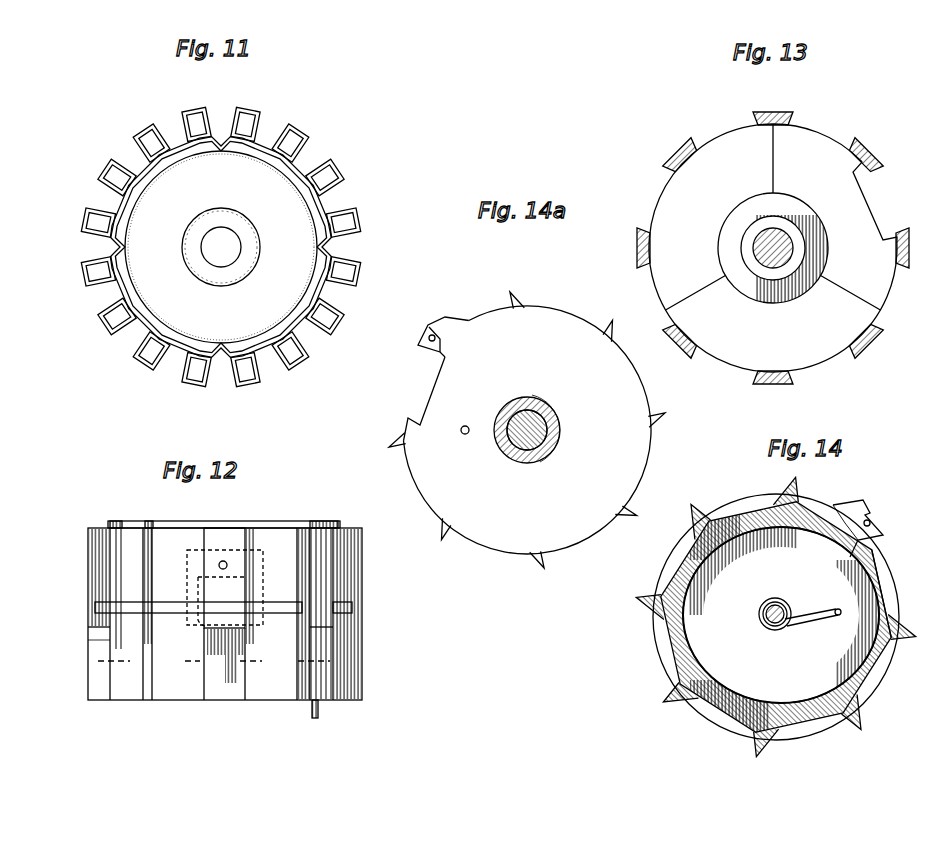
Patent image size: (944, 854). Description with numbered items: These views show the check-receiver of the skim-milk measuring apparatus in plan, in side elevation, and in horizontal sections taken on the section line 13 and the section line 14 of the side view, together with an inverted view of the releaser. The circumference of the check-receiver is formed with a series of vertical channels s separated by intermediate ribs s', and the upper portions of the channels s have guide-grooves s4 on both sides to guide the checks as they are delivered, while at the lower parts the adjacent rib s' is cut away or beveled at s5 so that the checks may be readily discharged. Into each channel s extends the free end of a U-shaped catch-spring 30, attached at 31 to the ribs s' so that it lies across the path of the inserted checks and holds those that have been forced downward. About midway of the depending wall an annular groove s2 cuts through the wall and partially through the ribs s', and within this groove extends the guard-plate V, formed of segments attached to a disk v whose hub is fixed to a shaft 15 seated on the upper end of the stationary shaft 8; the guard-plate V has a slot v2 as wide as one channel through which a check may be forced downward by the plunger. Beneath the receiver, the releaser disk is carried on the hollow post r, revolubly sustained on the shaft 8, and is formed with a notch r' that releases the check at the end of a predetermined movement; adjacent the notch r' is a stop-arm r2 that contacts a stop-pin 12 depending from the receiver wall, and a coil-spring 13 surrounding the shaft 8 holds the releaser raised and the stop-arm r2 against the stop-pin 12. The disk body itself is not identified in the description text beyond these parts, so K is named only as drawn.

In FIG. 11, the vertical channel s is at (239, 241).
In FIG. 12, the vertical channel s is at (225, 610).
In FIG. 14, the vertical channel s is at (795, 621).
In FIG. 11, the rib s' is at (259, 234).
In FIG. 12, the rib s' is at (239, 664).
In FIG. 13, the rib s' is at (770, 248).
In FIG. 14, the rib s' is at (786, 559).
In FIG. 12, the annular groove s2 is at (270, 613).
In FIG. 11, the guide-groove s4 is at (120, 170).
In FIG. 12, the guide-groove s4 is at (362, 683).
In FIG. 14, the guide-groove s4 is at (845, 722).
In FIG. 12, the beveled cut-away s5 is at (100, 678).
In FIG. 14, the beveled cut-away s5 is at (660, 612).
In FIG. 11, the catch-spring 30 is at (336, 188).
In FIG. 11, the attachment point 31 is at (322, 345).
In FIG. 12, the stop-pin 12 is at (320, 713).
In FIG. 14, the stop-pin 12 is at (876, 521).
In FIG. 12, the coil-spring 13 is at (82, 607).
In FIG. 12, the section line 14 is at (82, 661).
In FIG. 13, the shaft 15 is at (784, 236).
In FIG. 14A, the shaft 8 is at (562, 431).
In FIG. 14, the shaft 8 is at (785, 604).
In FIG. 14A, the disc K is at (527, 430).
In FIG. 14, the disc K is at (662, 692).
In FIG. 14A, the hollow post r is at (527, 455).
In FIG. 14A, the notch r' is at (408, 399).
In FIG. 14, the notch r' is at (900, 593).
In FIG. 14A, the stop-arm r2 is at (447, 320).
In FIG. 14, the stop-arm r2 is at (858, 506).
In FIG. 13, the guard-plate V is at (773, 248).
In FIG. 13, the disk v is at (753, 295).
In FIG. 13, the slot v2 is at (870, 205).